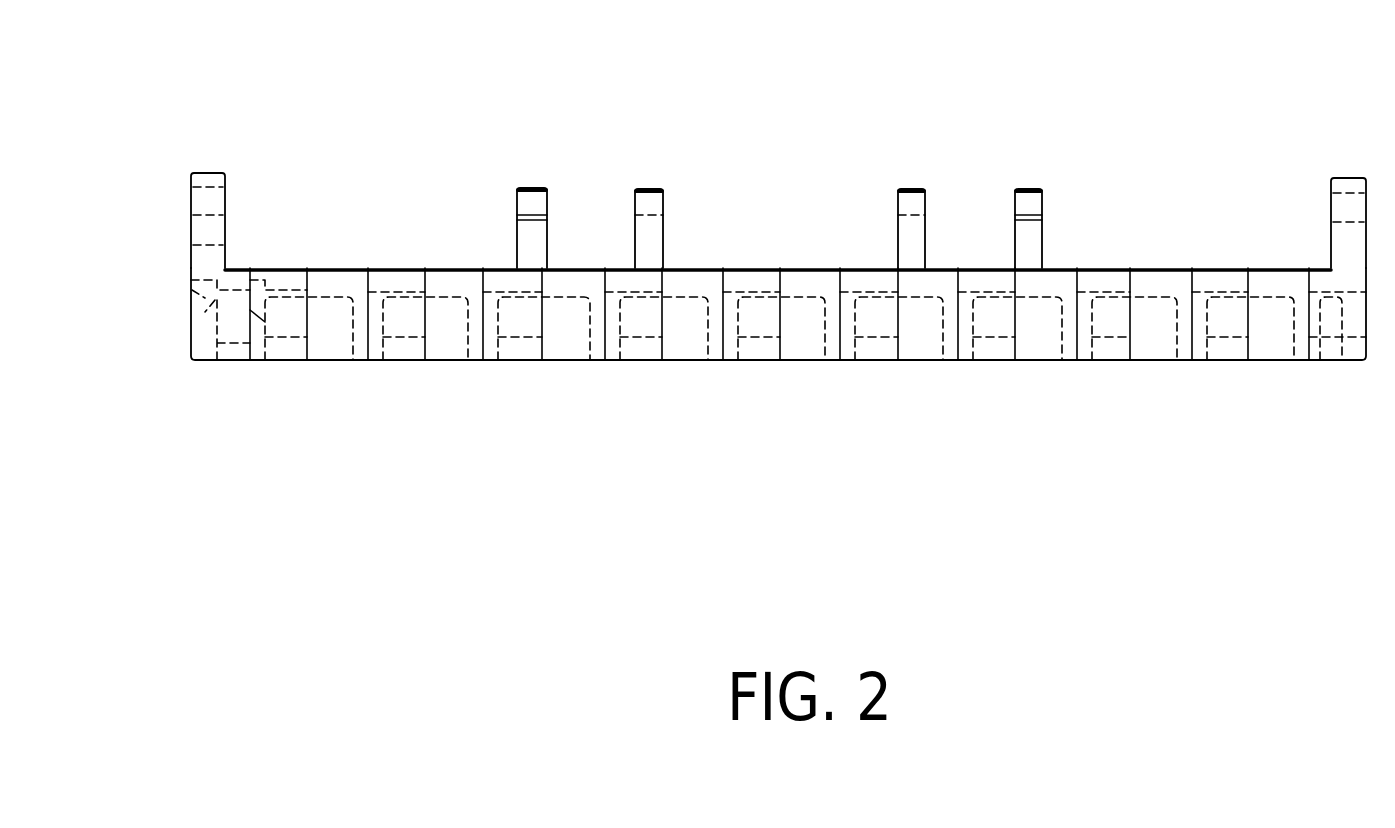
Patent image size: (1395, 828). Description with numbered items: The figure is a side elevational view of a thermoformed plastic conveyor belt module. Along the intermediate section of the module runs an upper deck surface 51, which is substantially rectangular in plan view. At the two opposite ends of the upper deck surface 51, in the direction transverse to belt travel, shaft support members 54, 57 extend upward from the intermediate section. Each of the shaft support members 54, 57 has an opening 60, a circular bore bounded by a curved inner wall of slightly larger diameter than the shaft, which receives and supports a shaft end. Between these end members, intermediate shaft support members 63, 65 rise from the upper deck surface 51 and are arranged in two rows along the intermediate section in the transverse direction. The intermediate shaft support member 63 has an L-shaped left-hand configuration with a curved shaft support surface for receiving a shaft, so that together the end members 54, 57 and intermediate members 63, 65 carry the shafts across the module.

The upper deck surface 51 is at (385, 267).
The shaft support member 54 is at (1355, 178).
The shaft support member 57 is at (195, 177).
The opening 60 is at (202, 215).
The intermediate shaft support member 63 is at (640, 188).
The intermediate shaft support member 65 is at (517, 187).